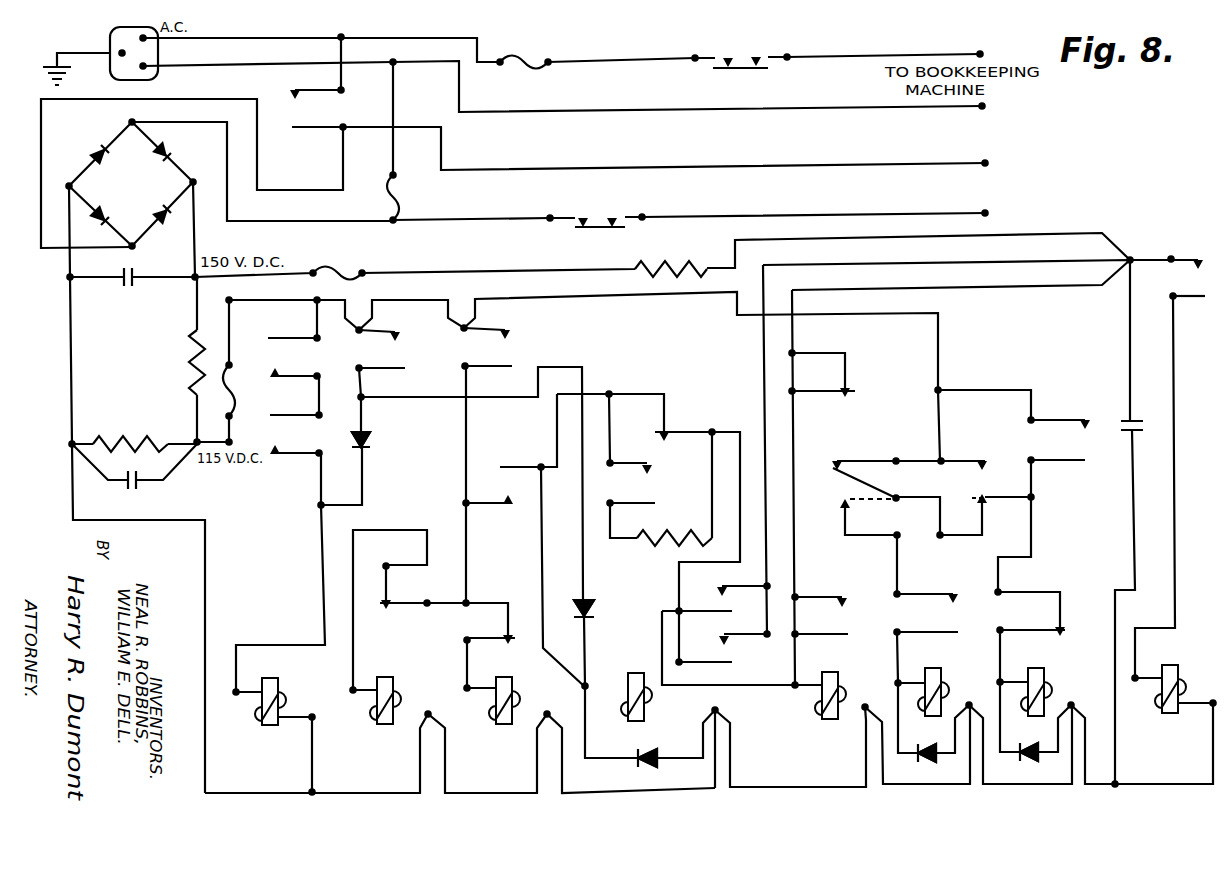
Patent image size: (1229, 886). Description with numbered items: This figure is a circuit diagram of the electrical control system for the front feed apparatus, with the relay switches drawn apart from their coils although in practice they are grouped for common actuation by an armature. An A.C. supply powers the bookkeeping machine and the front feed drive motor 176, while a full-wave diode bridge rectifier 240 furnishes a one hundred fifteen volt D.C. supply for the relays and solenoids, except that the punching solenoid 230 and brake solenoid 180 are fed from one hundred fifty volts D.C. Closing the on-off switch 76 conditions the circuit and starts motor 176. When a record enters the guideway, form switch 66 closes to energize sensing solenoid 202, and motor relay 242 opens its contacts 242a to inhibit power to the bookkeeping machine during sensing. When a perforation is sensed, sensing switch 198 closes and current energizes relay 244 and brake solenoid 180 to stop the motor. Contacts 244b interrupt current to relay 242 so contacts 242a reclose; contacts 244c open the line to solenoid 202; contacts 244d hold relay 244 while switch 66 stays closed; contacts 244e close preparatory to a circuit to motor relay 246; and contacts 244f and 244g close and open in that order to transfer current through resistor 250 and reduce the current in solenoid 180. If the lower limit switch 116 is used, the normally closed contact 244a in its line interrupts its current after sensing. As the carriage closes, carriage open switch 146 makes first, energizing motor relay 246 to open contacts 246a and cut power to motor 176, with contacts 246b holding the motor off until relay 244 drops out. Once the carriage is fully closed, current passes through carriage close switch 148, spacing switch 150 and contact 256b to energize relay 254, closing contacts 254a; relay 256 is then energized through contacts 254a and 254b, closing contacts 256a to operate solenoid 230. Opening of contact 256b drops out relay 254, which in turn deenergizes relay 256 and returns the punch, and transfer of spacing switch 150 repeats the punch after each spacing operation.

The front feed drive motor 176 is at (653, 174).
The on-off switch 76 is at (317, 138).
The full-wave diode bridge rectifier 240 is at (131, 184).
The contacts of motor relay 242 242a is at (741, 71).
The contacts of motor relay 246 246a is at (585, 231).
The contacts of relay 256 256a is at (1192, 303).
The normally closed contact of relay 244 244a is at (821, 382).
The contacts of relay 244 244e is at (292, 393).
The contacts of motor relay 246 246b is at (296, 461).
The carriage open switch 146 is at (380, 382).
The form switch 66 is at (486, 375).
The contacts of relay 244 244d is at (487, 510).
The contacts of relay 244 244g is at (685, 442).
The contacts of relay 244 244f is at (630, 518).
The resistor 250 is at (658, 543).
The sensing switch 198 is at (703, 636).
The carriage close switch 148 is at (909, 489).
The spacing switch 150 is at (994, 508).
The contacts of relay 254 254b is at (1056, 470).
The lower limit switch 116 is at (819, 643).
The contacts of relay 244 244b is at (421, 599).
The contacts of relay 244 244c is at (489, 633).
The contacts of relay 254 254a is at (925, 642).
The contact of relay 256 256b is at (1030, 641).
The motor relay 246 is at (269, 714).
The motor relay 242 is at (385, 714).
The sensing solenoid 202 is at (500, 714).
The relay 244 is at (636, 708).
The brake solenoid 180 is at (829, 708).
The relay 256 is at (931, 705).
The relay 254 is at (1033, 705).
The punching solenoid 230 is at (1166, 703).